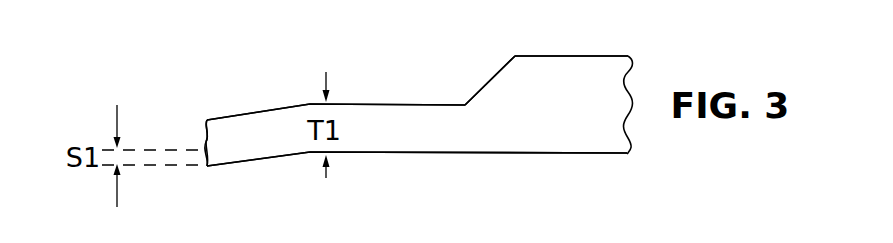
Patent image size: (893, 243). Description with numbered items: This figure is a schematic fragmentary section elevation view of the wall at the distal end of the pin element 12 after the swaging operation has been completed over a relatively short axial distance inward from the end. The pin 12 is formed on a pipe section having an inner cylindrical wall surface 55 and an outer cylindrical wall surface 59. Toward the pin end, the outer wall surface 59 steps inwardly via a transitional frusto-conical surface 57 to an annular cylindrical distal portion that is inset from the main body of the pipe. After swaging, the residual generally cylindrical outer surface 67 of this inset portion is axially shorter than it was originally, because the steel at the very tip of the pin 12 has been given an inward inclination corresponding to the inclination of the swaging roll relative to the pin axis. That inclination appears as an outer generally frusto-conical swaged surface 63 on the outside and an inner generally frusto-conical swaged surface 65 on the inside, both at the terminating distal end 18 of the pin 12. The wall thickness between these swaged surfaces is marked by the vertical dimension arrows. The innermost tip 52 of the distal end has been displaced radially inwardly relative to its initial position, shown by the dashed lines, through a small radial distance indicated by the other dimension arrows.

The pin element 12 is at (561, 127).
The terminating distal end 18 is at (207, 137).
The innermost tip 52 is at (207, 168).
The inner cylindrical wall surface 55 is at (437, 153).
The transitional frusto-conical surface 57 is at (480, 91).
The outer cylindrical wall surface 59 is at (572, 55).
The outer frusto-conical swaged surface 63 is at (262, 110).
The inner frusto-conical swaged surface 65 is at (250, 162).
The residual cylindrical outer surface 67 is at (400, 103).